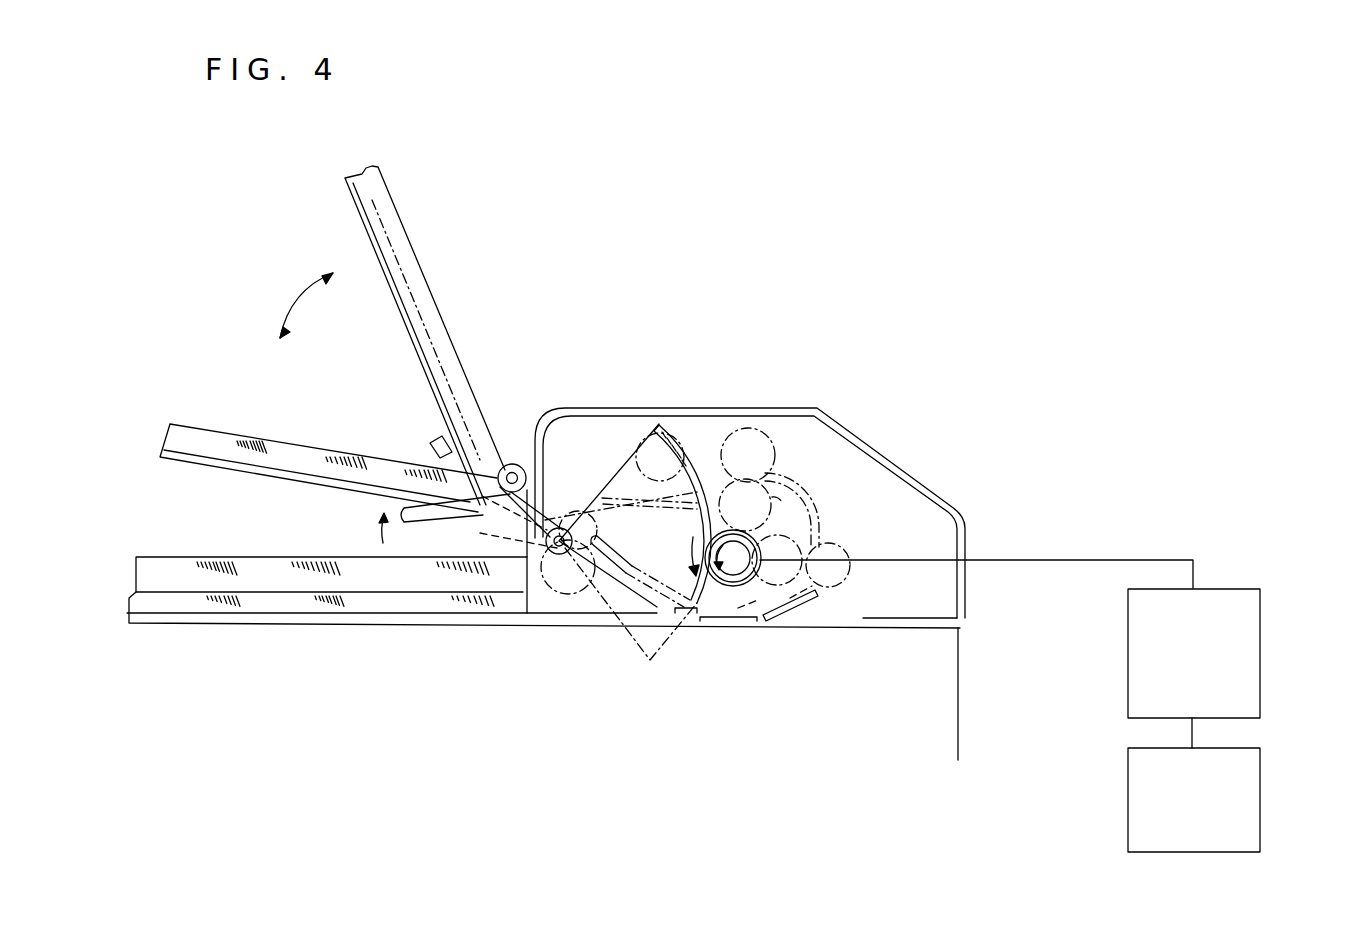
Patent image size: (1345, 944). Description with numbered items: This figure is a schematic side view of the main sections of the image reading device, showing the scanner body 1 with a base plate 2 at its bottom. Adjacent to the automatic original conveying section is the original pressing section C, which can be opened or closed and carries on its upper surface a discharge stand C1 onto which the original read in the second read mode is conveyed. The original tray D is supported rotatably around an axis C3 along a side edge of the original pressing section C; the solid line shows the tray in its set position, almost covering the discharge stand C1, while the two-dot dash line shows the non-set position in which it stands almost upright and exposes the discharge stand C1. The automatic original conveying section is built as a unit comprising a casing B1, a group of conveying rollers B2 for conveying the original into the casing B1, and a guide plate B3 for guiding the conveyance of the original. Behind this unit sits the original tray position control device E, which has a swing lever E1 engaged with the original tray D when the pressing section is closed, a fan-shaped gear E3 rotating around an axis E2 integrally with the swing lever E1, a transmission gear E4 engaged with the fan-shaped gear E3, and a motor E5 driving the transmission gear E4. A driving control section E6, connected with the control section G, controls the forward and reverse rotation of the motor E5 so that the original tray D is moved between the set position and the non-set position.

The scanner body 1 is at (958, 700).
The base plate 2 is at (256, 620).
The original pressing section C is at (165, 567).
The discharge stand C1 is at (247, 568).
The axis C3 is at (513, 465).
The original tray D is at (398, 203).
The original tray position control device E is at (607, 448).
The swing lever E1 is at (453, 523).
The axis E2 is at (557, 553).
The fan-shaped gear E3 is at (703, 450).
The transmission gear E4 is at (770, 572).
The motor E5 is at (733, 580).
The driving control section E6 is at (1240, 588).
The casing B1 is at (860, 433).
The group of conveying rollers B2 is at (771, 442).
The guide plate B3 is at (817, 510).
The control section G is at (1128, 800).